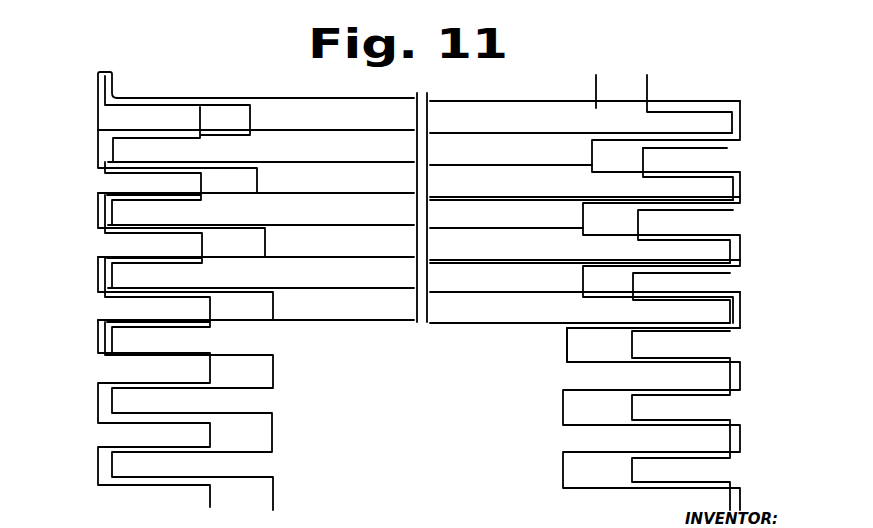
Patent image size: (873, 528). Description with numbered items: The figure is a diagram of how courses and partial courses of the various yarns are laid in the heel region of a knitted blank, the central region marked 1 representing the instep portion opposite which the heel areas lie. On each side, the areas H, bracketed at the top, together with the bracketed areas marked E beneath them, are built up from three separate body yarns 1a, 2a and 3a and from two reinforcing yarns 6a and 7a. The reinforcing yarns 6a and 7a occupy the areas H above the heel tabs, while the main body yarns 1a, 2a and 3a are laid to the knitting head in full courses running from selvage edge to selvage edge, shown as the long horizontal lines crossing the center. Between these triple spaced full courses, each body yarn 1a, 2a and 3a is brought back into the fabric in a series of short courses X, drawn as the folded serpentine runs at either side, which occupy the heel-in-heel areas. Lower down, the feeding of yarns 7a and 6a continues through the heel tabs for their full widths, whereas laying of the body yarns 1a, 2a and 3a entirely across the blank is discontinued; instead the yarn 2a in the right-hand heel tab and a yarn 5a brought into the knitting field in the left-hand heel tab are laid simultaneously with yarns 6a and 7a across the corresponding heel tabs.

The folded strip assembly 1 is at (593, 97).
The body yarn 1a is at (308, 160).
The body yarn 2a is at (310, 128).
The body yarn 3a is at (310, 192).
The yarn 5a is at (562, 465).
The reinforcing yarn 6a is at (275, 312).
The reinforcing yarn 7a is at (567, 348).
The short courses X is at (118, 296).
The area H is at (748, 40).
The edge width E is at (745, 75).